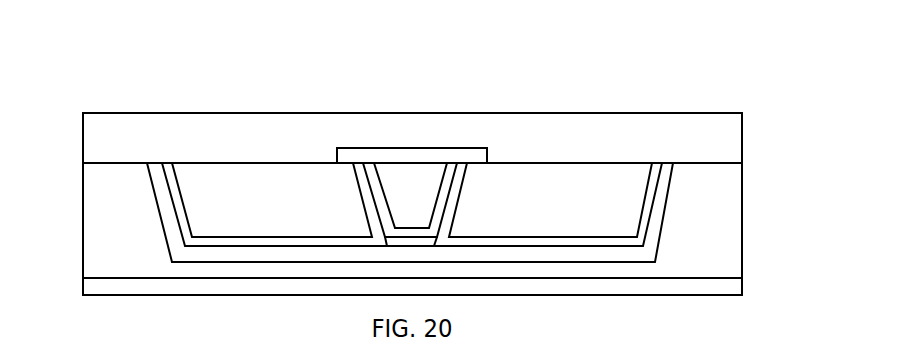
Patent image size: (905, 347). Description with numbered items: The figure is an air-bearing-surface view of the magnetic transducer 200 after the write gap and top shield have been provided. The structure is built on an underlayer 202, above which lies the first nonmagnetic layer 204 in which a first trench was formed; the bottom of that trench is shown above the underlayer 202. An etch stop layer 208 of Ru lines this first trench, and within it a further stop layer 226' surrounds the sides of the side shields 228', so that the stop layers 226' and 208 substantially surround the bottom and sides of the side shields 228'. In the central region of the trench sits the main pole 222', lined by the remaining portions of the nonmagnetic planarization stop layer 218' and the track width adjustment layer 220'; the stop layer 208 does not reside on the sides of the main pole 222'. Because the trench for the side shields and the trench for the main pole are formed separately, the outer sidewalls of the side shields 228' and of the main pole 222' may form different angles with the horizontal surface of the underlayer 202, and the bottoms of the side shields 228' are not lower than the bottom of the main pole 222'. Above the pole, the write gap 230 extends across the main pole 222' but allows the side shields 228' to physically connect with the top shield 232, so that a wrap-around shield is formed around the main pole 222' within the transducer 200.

The magnetic transducer 200 is at (392, 43).
The underlayer 202 is at (82, 292).
The first nonmagnetic layer 204 is at (743, 233).
The etch stop layer 208 is at (672, 163).
The planarization stop layer 218' is at (468, 153).
The track width adjustment layer 220' is at (413, 165).
The main pole 222' is at (444, 140).
The stop layer 226' is at (412, 165).
The side shields 228' is at (380, 161).
The write gap 230 is at (337, 148).
The top shield 232 is at (742, 142).